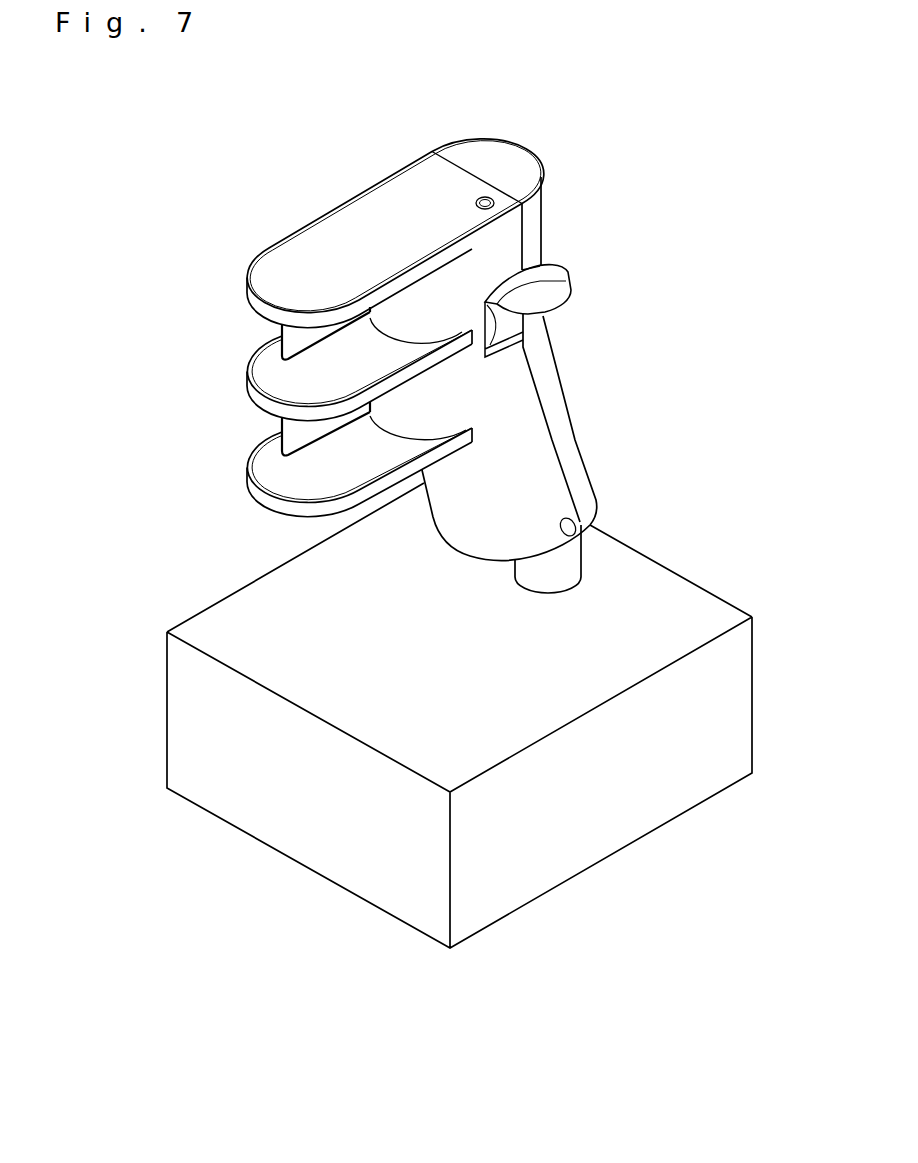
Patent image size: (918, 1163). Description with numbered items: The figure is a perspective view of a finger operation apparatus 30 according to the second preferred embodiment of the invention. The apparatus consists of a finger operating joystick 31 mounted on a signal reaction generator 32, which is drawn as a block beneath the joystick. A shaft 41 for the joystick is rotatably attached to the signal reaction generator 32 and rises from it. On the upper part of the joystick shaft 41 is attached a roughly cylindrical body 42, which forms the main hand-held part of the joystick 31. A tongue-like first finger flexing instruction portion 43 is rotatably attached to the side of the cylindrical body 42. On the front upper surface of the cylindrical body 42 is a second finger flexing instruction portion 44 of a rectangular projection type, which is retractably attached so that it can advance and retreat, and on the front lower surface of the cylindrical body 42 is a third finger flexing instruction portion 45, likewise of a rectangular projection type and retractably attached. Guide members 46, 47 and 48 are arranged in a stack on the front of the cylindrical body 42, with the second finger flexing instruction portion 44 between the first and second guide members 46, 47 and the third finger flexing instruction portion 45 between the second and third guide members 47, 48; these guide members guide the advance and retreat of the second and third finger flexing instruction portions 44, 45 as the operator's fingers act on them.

The finger operation apparatus 30 is at (598, 105).
The finger operating joystick 31 is at (776, 84).
The signal reaction generator 32 is at (756, 706).
The shaft 41 is at (582, 558).
The cylindrical body 42 is at (532, 223).
The first finger flexing instruction portion 43 is at (555, 268).
The second finger flexing instruction portion 44 is at (293, 329).
The third finger flexing instruction portion 45 is at (295, 429).
The guide member 46 is at (356, 212).
The guide member 47 is at (290, 376).
The guide member 48 is at (302, 472).